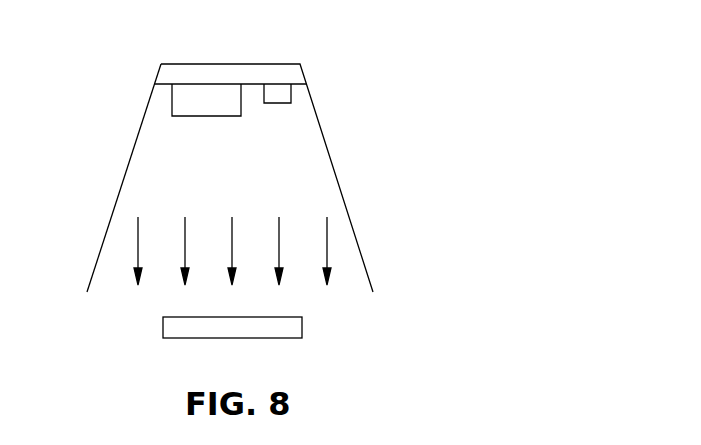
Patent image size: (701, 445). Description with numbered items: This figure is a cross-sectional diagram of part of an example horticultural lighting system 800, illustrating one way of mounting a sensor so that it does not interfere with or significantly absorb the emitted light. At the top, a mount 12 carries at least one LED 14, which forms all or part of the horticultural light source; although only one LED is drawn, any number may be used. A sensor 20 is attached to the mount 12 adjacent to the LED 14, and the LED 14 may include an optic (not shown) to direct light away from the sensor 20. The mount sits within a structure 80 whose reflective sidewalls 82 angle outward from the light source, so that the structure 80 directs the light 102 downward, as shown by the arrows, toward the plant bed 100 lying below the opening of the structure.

The mount 12 is at (235, 75).
The LED 14 is at (212, 107).
The sensor 20 is at (282, 100).
The structure 80 is at (333, 163).
The reflective sidewalls 82 is at (128, 167).
The plant bed 100 is at (294, 330).
The light 102 is at (277, 247).
The horticultural lighting system 800 is at (596, 79).